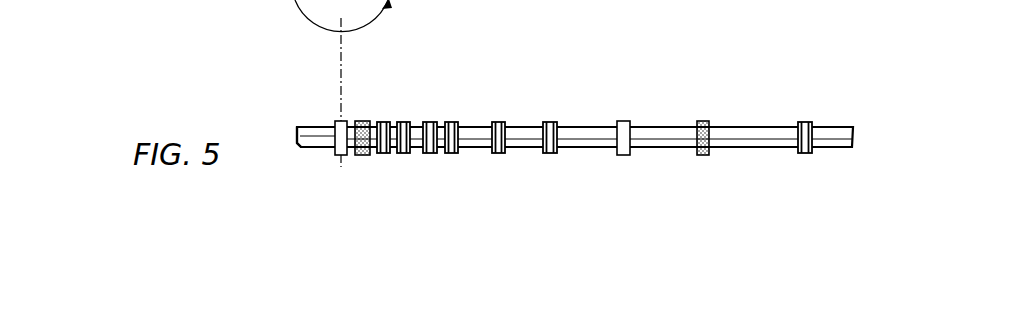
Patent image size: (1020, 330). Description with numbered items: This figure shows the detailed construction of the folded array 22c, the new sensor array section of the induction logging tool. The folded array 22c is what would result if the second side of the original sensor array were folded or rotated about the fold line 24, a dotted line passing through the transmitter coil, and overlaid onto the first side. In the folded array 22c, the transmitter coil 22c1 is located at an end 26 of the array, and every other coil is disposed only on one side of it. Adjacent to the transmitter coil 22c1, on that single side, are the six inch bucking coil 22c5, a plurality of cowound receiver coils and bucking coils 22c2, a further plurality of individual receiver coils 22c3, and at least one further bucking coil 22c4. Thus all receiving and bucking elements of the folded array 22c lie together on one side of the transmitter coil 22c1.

The folded array 22c is at (646, 78).
The fold line 24 is at (340, 73).
The end of the folded array 26 is at (310, 153).
The transmitter coil 22c1 is at (340, 157).
The plurality of cowound receiver coils and bucking coils 22c2 is at (590, 85).
The plurality of individual receiver coils 22c3 is at (788, 159).
The further bucking coil 22c4 is at (704, 120).
The 6 inch bucking coil 22c5 is at (364, 120).